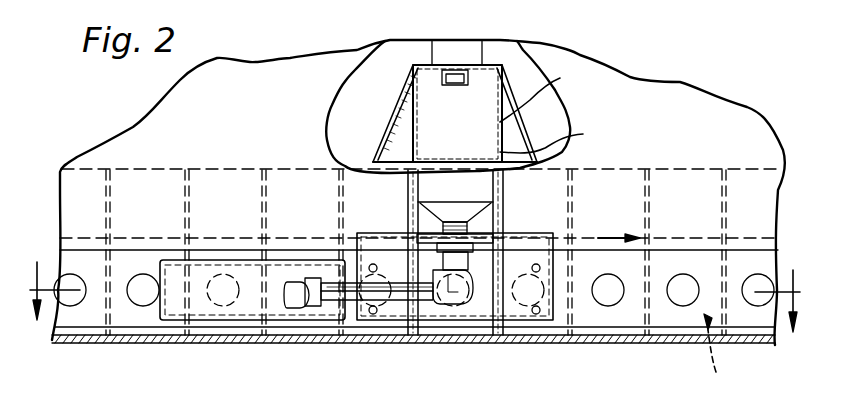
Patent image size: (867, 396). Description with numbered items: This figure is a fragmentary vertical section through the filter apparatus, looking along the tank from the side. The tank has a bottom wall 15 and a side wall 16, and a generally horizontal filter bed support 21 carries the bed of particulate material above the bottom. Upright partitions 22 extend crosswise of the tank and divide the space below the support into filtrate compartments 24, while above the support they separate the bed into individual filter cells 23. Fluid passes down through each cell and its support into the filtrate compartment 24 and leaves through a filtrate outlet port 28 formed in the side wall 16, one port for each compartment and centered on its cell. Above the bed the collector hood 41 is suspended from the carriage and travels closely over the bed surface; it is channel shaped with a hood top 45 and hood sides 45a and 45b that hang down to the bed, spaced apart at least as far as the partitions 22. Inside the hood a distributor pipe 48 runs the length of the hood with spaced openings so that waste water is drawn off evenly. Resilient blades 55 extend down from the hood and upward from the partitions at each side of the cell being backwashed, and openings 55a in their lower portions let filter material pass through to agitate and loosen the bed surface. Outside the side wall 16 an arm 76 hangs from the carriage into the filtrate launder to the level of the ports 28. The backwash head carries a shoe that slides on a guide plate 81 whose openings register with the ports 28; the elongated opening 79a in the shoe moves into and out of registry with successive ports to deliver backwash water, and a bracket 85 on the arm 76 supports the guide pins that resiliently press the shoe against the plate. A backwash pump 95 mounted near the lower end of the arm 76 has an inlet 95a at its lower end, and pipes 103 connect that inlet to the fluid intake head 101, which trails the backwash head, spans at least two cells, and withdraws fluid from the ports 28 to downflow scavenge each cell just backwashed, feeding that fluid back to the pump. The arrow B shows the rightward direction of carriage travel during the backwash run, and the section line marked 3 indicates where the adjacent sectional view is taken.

The section line 3- 3 is at (415, 282).
The bottom wall 15 is at (615, 338).
The side wall 16 is at (638, 92).
The filter bed support 21 is at (672, 240).
The partition 22 is at (198, 168).
The filter cell 23 is at (676, 188).
The filtrate compartment 24 is at (723, 352).
The filtrate outlet port 28 is at (605, 310).
The collector hood 41 is at (498, 65).
The hood top 45 is at (420, 65).
The hood side 45a is at (508, 124).
The hood side 45b is at (396, 120).
The distributor pipe 48 is at (455, 85).
The blade 55 is at (545, 93).
The opening 55a is at (563, 137).
The arm 76 is at (408, 196).
The elongated opening 79a is at (475, 322).
The guide plate 81 is at (710, 265).
The bracket 85 is at (520, 233).
The backwash pump 95 is at (440, 202).
The inlet 95a is at (485, 225).
The fluid intake head 101 is at (240, 320).
The pipe 103 is at (395, 318).
The arrow B is at (588, 234).